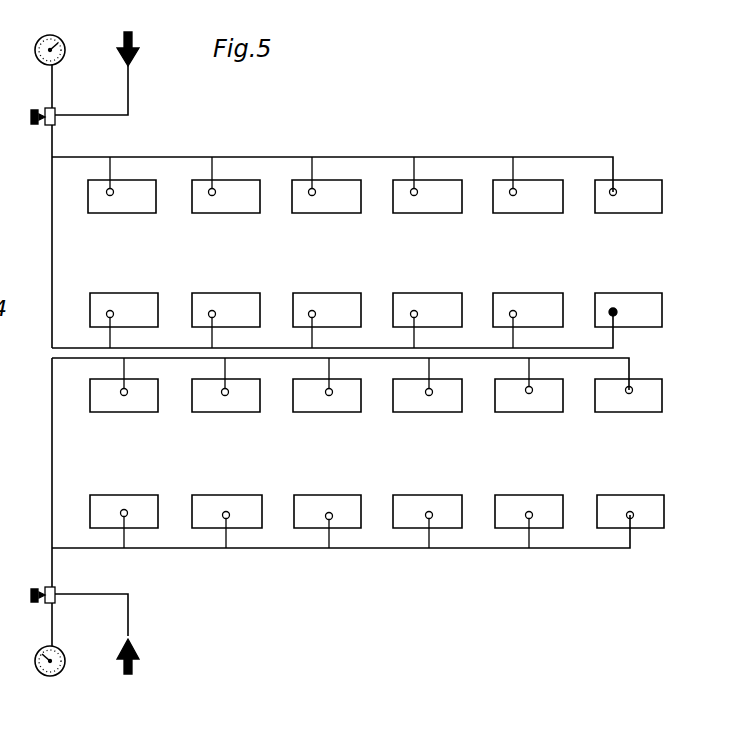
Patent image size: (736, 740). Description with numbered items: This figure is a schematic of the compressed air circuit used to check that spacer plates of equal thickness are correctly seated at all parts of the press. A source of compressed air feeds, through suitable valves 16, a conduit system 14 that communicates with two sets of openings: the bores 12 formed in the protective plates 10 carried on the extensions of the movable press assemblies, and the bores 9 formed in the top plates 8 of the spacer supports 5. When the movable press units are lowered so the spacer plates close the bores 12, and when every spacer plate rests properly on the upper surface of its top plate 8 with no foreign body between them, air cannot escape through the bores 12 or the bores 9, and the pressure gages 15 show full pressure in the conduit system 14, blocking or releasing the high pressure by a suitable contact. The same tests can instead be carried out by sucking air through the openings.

The spacer support 5 is at (34, 662).
The top plate 8 is at (640, 398).
The bore 9 is at (225, 396).
The protective plate 10 is at (638, 193).
The bore 12 is at (110, 196).
The conduit system 14 is at (128, 100).
The gage 15 is at (35, 48).
The valve 16 is at (55, 125).